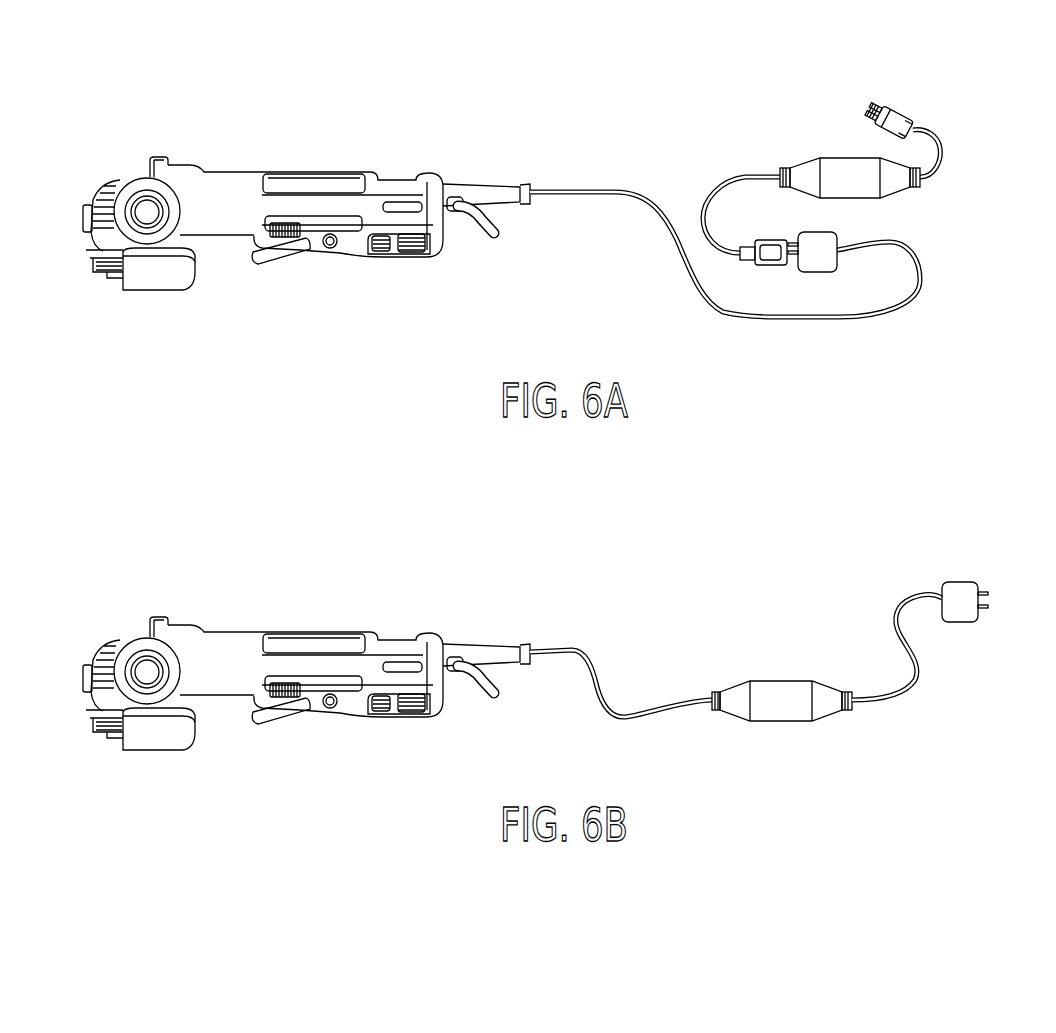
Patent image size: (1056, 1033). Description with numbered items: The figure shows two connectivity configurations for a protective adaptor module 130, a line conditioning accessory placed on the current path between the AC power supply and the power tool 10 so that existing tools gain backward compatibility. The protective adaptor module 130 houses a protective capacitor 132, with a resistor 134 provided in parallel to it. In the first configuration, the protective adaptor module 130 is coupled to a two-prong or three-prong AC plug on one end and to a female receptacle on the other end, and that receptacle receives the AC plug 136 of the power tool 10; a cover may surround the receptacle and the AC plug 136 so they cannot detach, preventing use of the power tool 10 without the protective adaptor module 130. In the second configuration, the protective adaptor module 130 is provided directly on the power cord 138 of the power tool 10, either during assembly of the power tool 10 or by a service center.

In FIG. 6A, the power tool 10 is at (220, 182).
In FIG. 6B, the power tool 10 is at (225, 642).
In FIG. 6A, the protective adaptor module 130 is at (802, 175).
In FIG. 6B, the protective adaptor module 130 is at (780, 683).
In FIG. 6A, the protective capacitor 132 is at (892, 115).
In FIG. 6B, the protective capacitor 132 is at (960, 588).
In FIG. 6A, the resistor 134 is at (770, 243).
In FIG. 6A, the AC plug of the power tool 136 is at (818, 263).
In FIG. 6B, the power cord 138 is at (590, 657).